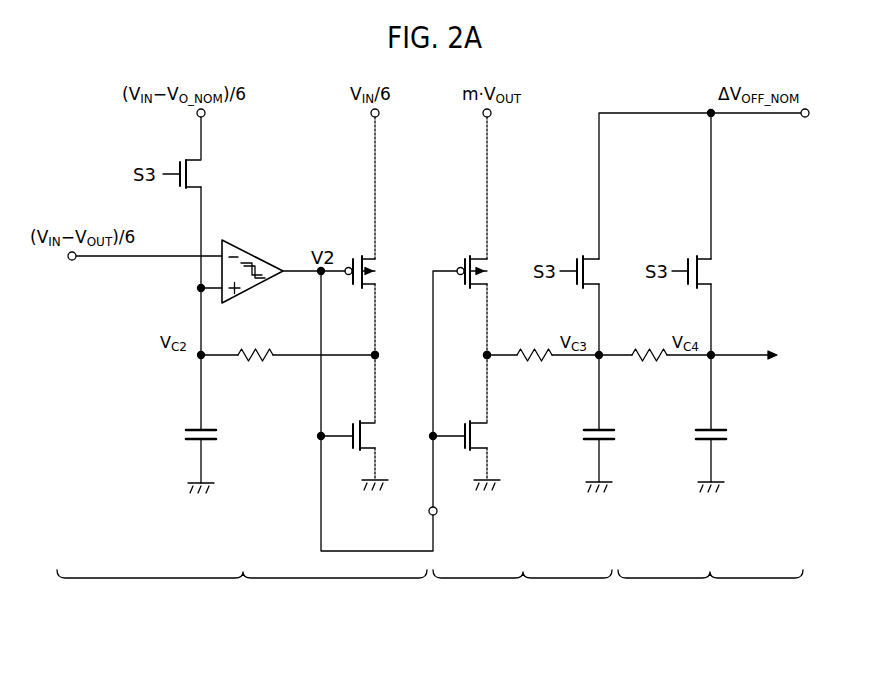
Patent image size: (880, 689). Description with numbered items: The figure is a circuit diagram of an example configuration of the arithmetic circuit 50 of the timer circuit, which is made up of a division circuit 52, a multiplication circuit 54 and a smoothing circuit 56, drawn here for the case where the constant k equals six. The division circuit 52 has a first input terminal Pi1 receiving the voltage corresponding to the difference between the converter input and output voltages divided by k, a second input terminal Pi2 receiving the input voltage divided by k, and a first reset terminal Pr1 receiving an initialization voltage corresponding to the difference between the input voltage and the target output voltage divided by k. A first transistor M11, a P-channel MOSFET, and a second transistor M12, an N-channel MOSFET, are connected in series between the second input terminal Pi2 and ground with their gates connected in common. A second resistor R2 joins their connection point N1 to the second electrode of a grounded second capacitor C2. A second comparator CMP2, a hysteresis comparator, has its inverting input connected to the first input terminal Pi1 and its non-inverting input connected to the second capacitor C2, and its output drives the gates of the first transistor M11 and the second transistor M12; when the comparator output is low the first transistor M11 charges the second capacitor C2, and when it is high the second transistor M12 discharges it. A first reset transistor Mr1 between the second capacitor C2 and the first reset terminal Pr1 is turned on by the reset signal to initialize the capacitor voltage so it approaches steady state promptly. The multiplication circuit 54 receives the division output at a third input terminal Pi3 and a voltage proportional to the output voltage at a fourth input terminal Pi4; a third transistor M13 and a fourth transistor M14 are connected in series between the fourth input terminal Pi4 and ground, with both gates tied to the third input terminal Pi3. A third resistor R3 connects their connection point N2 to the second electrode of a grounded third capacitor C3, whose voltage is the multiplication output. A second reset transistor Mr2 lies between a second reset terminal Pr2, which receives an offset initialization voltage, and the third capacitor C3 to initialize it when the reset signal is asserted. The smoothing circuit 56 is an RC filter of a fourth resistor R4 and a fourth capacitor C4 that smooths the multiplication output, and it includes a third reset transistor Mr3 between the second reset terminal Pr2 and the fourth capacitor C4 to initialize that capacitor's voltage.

The first reset terminal Pr1 is at (206, 113).
The second reset terminal Pr2 is at (805, 118).
The first input terminal Pi1 is at (72, 261).
The second input terminal Pi2 is at (380, 113).
The third input terminal Pi3 is at (438, 511).
The fourth input terminal Pi4 is at (492, 113).
The first reset transistor Mr1 is at (207, 174).
The second reset transistor Mr2 is at (607, 263).
The third reset transistor Mr3 is at (716, 271).
The first transistor M11 is at (384, 263).
The second transistor M12 is at (383, 430).
The third transistor M13 is at (495, 263).
The fourth transistor M14 is at (491, 436).
The second comparator CMP2 is at (272, 241).
The second resistor R2 is at (257, 363).
The third resistor R3 is at (536, 363).
The fourth resistor R4 is at (651, 363).
The second capacitor C2 is at (182, 436).
The third capacitor C3 is at (614, 436).
The fourth capacitor C4 is at (726, 436).
The connection point N1 is at (377, 352).
The connection point N2 is at (488, 352).
The division circuit 52 is at (242, 593).
The multiplication circuit 54 is at (522, 593).
The smoothing circuit 56 is at (710, 593).
The arithmetic circuit 50 is at (447, 665).